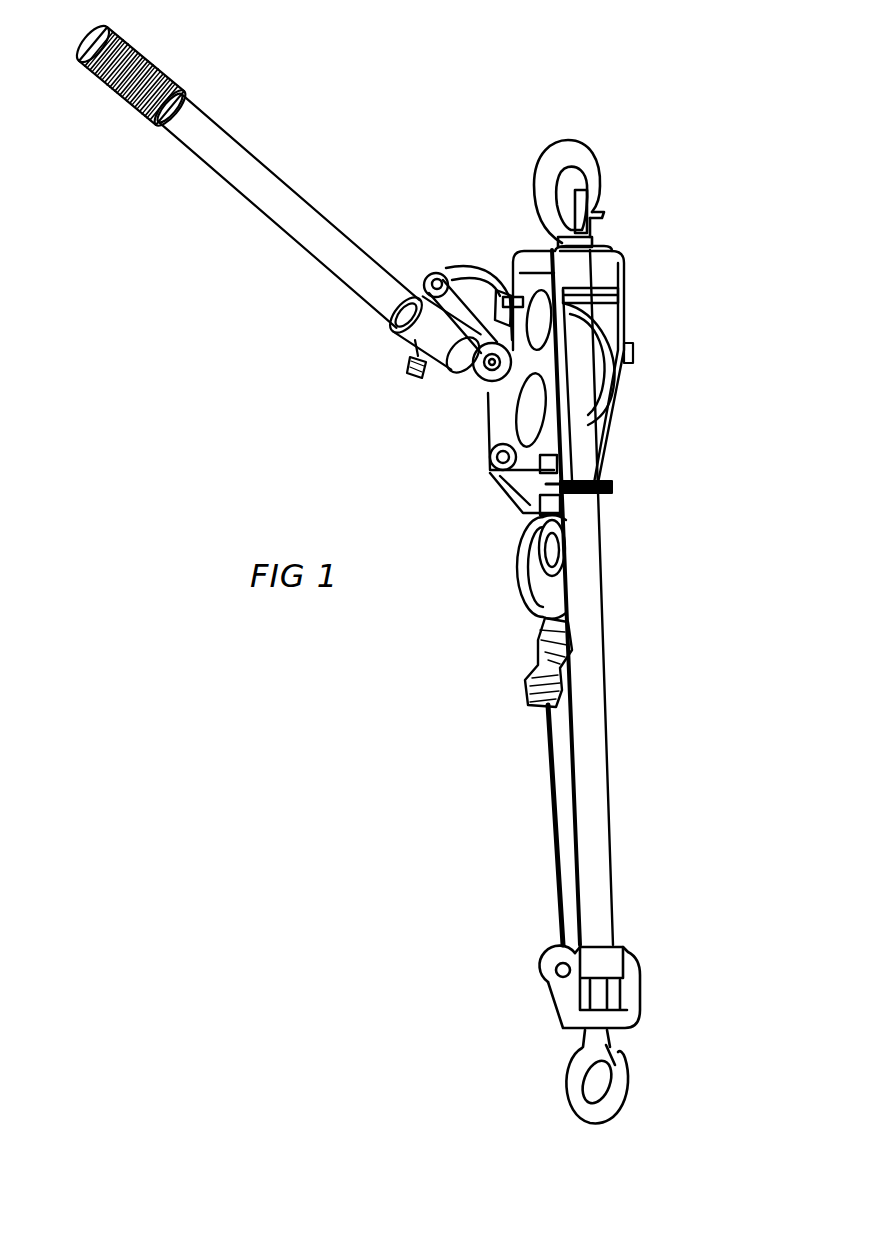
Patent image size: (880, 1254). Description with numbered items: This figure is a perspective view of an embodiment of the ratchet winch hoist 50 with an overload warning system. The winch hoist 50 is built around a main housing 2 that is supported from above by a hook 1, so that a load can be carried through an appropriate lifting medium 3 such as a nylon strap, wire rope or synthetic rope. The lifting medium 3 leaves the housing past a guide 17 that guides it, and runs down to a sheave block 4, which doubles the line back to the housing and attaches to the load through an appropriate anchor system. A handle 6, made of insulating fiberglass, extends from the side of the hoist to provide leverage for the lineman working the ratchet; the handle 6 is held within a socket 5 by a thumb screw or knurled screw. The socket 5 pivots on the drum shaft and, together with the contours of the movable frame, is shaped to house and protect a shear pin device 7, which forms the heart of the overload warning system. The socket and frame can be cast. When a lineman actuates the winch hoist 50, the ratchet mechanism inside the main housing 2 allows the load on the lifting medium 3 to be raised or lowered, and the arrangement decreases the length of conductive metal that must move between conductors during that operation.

The hook 1 is at (575, 160).
The main housing 2 is at (593, 270).
The lifting medium 3 is at (583, 563).
The sheave block 4 is at (563, 995).
The socket 5 is at (433, 332).
The handle 6 is at (267, 193).
The shear pin device 7 is at (440, 282).
The guide 17 is at (610, 486).
The winch hoist 50 is at (655, 331).